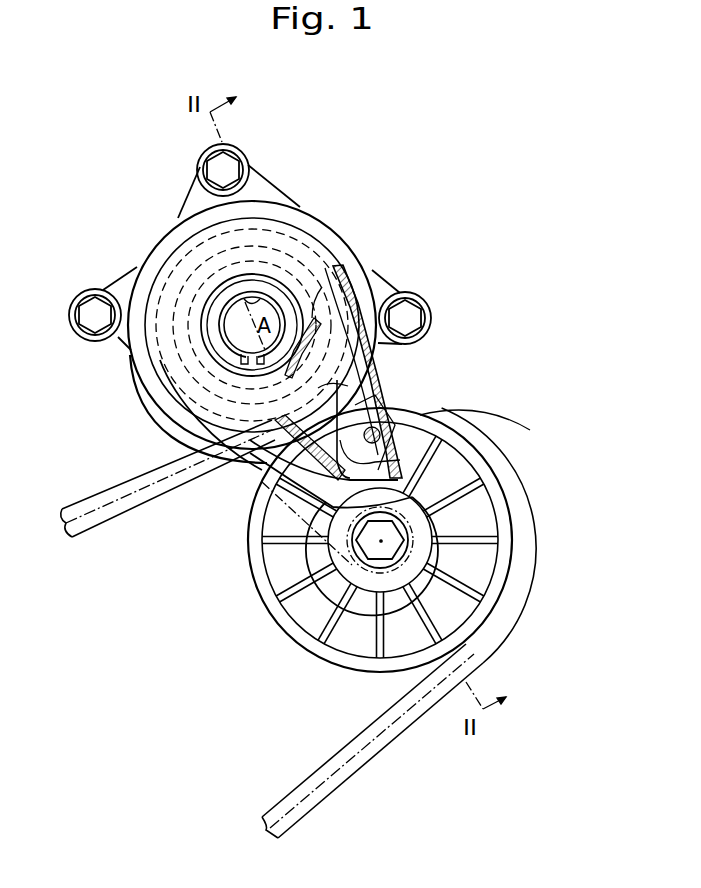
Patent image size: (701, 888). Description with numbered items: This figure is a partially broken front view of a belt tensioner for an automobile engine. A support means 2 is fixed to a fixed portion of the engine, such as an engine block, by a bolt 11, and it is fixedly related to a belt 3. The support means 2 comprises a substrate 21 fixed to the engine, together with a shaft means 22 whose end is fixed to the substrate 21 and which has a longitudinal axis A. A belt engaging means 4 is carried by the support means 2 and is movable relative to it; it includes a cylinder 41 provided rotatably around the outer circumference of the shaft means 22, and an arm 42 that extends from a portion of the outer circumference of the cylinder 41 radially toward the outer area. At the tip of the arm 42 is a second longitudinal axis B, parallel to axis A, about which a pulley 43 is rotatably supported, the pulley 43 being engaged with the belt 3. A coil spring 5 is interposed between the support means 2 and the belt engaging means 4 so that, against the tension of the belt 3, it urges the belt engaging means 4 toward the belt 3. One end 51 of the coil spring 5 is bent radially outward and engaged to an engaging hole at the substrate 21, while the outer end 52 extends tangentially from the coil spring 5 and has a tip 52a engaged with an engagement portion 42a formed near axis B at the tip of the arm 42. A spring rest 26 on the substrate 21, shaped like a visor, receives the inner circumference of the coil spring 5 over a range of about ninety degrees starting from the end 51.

The support means 2 is at (318, 213).
The belt 3 is at (147, 497).
The belt engaging means 4 is at (321, 566).
The coil spring 5 is at (330, 283).
The bolt 11 is at (224, 165).
The substrate 21 is at (256, 190).
The shaft means 22 is at (238, 340).
The spring rest 26 is at (305, 400).
The cylinder 41 is at (292, 360).
The arm 42 is at (253, 462).
The engagement portion 42a is at (390, 440).
The pulley 43 is at (302, 640).
The end of the coil spring 51 is at (373, 373).
The outer end of the coil spring 52 is at (365, 410).
The tip 52a is at (363, 463).